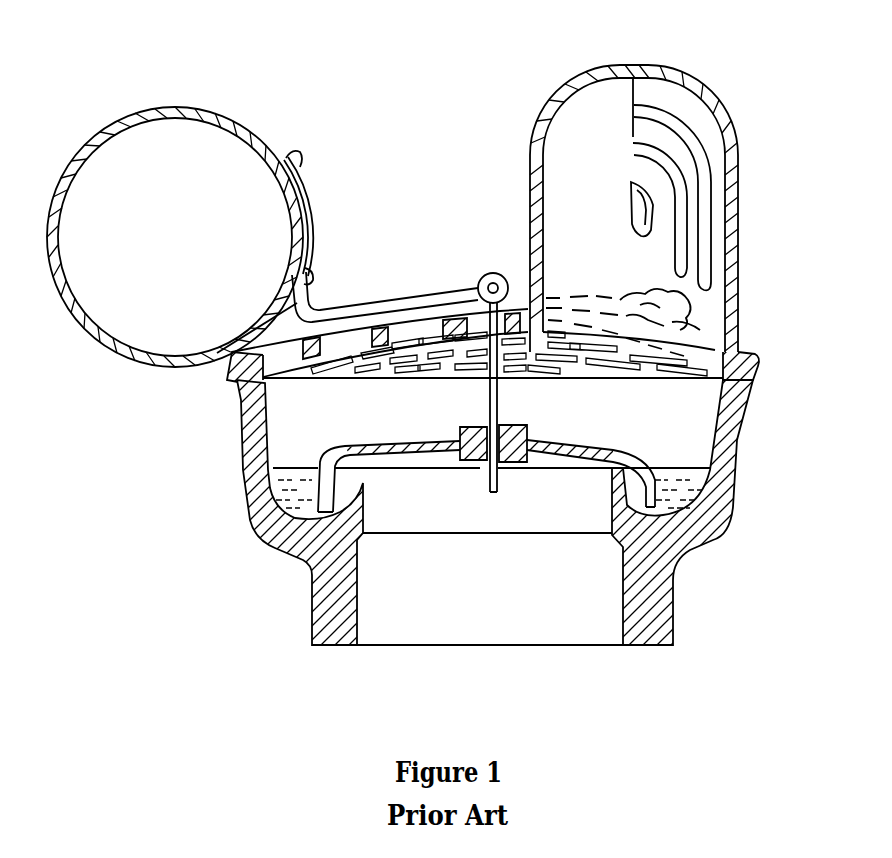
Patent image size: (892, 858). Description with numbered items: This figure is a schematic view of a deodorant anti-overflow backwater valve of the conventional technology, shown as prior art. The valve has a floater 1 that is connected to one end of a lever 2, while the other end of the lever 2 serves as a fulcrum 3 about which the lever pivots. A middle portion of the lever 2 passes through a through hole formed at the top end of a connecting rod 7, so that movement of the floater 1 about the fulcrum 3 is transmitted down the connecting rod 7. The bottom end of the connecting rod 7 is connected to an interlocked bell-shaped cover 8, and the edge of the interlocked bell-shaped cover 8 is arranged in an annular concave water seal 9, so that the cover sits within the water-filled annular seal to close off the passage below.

The floater 1 is at (189, 179).
The lever 2 is at (352, 303).
The fulcrum 3 is at (717, 318).
The connecting rod 7 is at (490, 408).
The interlocked bell-shaped cover 8 is at (363, 450).
The annular concave water seal 9 is at (677, 473).